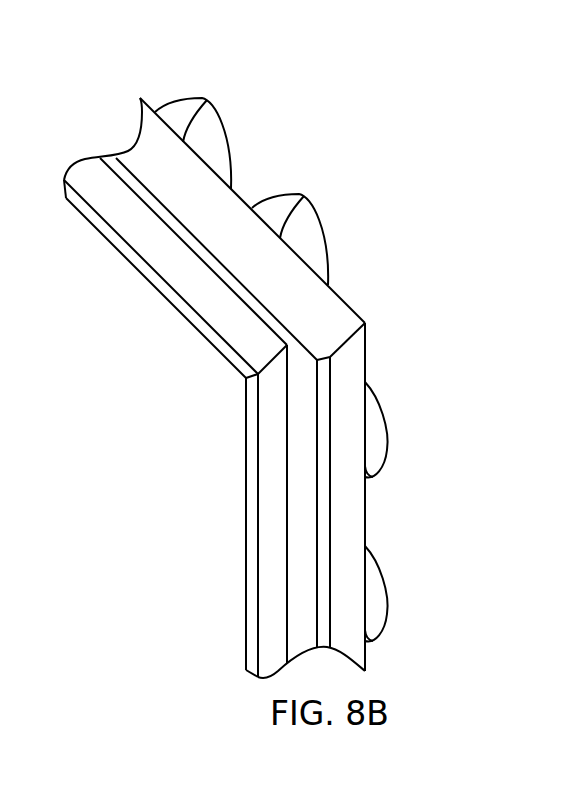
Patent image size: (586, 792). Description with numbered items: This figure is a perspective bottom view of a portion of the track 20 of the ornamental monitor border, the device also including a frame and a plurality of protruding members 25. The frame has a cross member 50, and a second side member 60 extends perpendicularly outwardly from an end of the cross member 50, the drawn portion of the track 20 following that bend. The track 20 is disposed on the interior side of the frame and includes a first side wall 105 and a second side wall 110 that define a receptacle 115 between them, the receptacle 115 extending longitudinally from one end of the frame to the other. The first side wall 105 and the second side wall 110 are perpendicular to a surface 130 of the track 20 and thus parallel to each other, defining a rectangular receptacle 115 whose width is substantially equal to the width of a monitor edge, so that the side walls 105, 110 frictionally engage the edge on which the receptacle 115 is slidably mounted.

The track 20 is at (191, 511).
The protruding members 25 is at (202, 99).
The cross member 50 is at (237, 217).
The second side member 60 is at (357, 511).
The first side wall 105 is at (105, 230).
The second side wall 110 is at (130, 159).
The receptacle 115 is at (263, 458).
The surface 130 is at (303, 405).